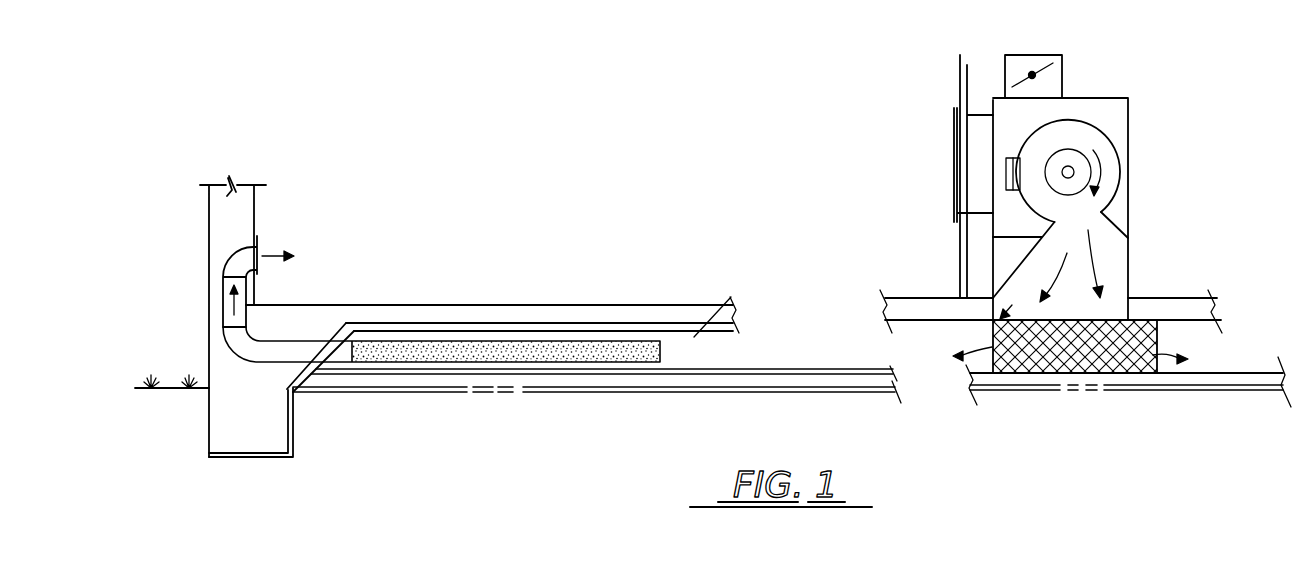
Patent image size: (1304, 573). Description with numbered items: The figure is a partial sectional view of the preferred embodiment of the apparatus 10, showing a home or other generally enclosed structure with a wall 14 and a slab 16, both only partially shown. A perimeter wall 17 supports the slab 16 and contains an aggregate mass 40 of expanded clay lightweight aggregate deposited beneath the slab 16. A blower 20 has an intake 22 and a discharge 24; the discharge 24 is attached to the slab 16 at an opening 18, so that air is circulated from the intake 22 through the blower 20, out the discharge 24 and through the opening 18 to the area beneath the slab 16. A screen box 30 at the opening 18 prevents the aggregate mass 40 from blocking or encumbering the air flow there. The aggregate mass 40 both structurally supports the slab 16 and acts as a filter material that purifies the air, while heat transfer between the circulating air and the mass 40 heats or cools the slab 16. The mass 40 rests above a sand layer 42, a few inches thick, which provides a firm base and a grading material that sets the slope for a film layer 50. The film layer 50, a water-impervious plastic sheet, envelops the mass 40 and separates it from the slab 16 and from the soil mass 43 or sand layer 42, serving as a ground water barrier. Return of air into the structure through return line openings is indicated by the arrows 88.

The apparatus 10 is at (617, 218).
The wall 14 is at (238, 217).
The slab 16 is at (467, 312).
The perimeter wall 17 is at (223, 423).
The opening 18 is at (1112, 287).
The blower 20 is at (1118, 200).
The intake 22 is at (946, 157).
The discharge 24 is at (993, 322).
The screen box 30 is at (1077, 373).
The aggregate mass 40 is at (733, 305).
The sand layer 42 is at (318, 380).
The soil mass 43 is at (415, 424).
The film layer 50 is at (257, 457).
The arrows 88 is at (268, 253).